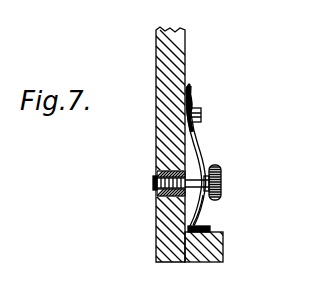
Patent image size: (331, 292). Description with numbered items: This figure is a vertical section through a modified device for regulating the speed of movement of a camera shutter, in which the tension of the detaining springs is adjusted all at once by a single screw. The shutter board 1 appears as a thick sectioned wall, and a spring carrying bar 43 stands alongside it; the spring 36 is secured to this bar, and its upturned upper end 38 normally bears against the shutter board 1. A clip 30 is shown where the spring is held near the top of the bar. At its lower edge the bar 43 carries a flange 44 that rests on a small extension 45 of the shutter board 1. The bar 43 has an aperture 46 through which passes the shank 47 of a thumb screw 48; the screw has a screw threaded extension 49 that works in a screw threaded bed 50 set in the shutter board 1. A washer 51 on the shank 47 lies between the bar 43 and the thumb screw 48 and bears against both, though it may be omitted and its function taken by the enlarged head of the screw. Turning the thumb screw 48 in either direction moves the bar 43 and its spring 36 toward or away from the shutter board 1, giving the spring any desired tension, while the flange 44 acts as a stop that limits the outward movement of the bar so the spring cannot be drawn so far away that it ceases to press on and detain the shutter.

The shutter board 1 is at (156, 149).
The clip 30 is at (201, 117).
The spring 36 is at (203, 93).
The upturned end 38 is at (191, 89).
The spring carrying bar 43 is at (204, 165).
The flange 44 is at (211, 227).
The extension 45 is at (223, 252).
The aperture 46 is at (206, 213).
The shank 47 is at (219, 172).
The thumb screw 48 is at (222, 184).
The screw threaded extension 49 is at (155, 189).
The screw threaded bed 50 is at (156, 179).
The washer 51 is at (207, 170).